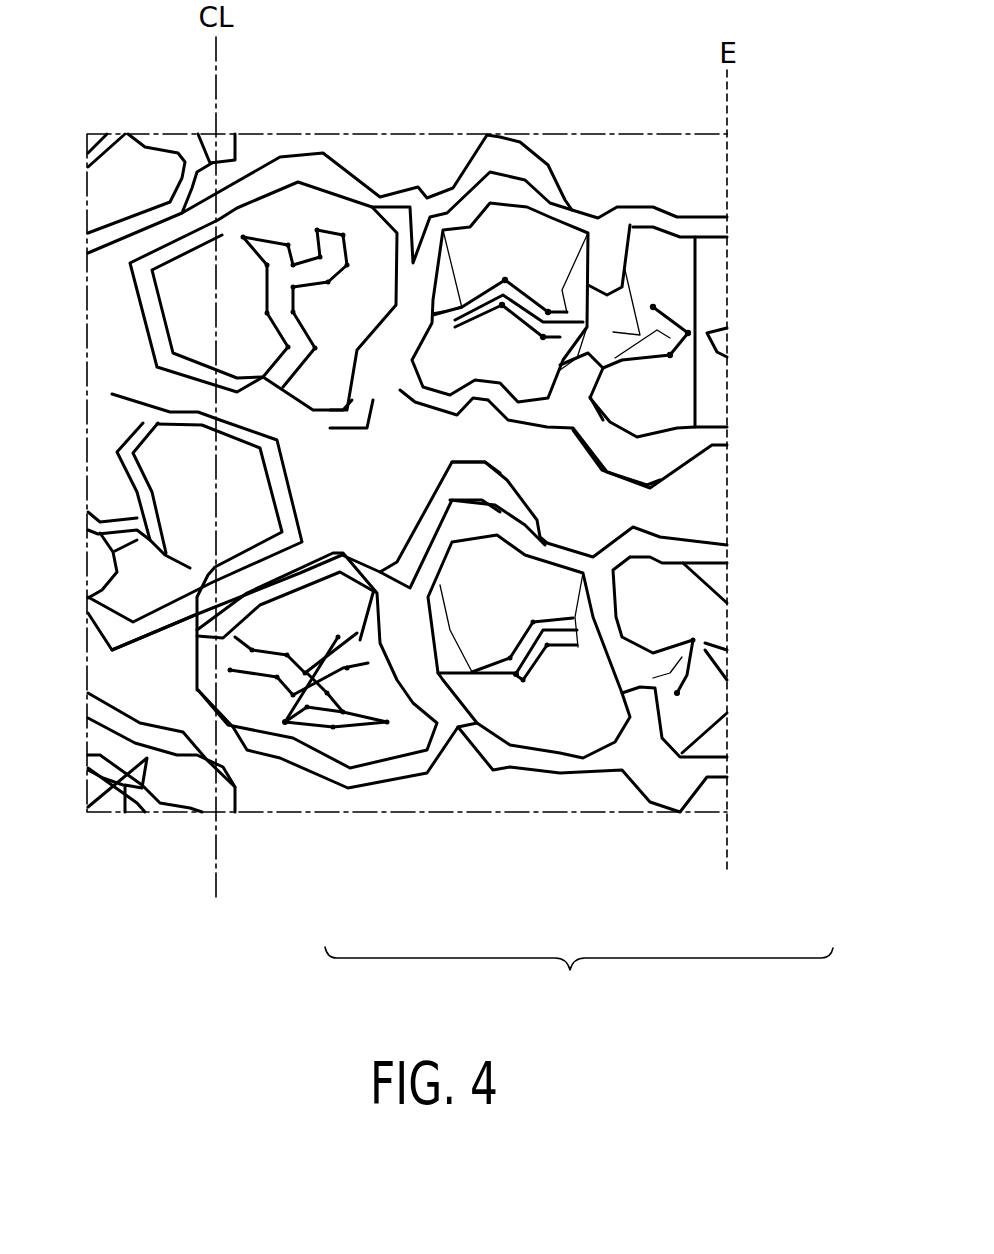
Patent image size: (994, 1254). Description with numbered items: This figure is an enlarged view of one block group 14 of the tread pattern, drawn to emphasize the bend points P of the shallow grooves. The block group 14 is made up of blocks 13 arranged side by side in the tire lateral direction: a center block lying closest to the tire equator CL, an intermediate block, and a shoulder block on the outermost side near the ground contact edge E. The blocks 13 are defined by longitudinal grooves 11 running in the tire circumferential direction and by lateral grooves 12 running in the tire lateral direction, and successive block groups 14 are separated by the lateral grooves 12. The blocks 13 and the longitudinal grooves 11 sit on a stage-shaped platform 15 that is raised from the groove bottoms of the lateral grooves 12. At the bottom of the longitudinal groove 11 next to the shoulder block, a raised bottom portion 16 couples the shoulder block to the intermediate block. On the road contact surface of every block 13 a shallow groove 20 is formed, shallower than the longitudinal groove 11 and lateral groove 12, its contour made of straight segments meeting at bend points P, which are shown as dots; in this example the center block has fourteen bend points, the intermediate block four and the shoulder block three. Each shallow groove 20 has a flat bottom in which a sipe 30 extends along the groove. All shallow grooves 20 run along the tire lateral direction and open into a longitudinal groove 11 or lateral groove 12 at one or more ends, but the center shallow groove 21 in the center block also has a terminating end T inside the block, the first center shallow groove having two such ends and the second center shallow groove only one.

The longitudinal groove 11 is at (578, 378).
The lateral groove 12 is at (610, 513).
The block 13 is at (352, 745).
The block group 14 is at (579, 980).
The platform 15 is at (657, 458).
The raised bottom portion 16 is at (603, 318).
The shallow groove 20 is at (473, 673).
The center shallow groove 21 is at (330, 217).
The sipe 30 is at (516, 674).